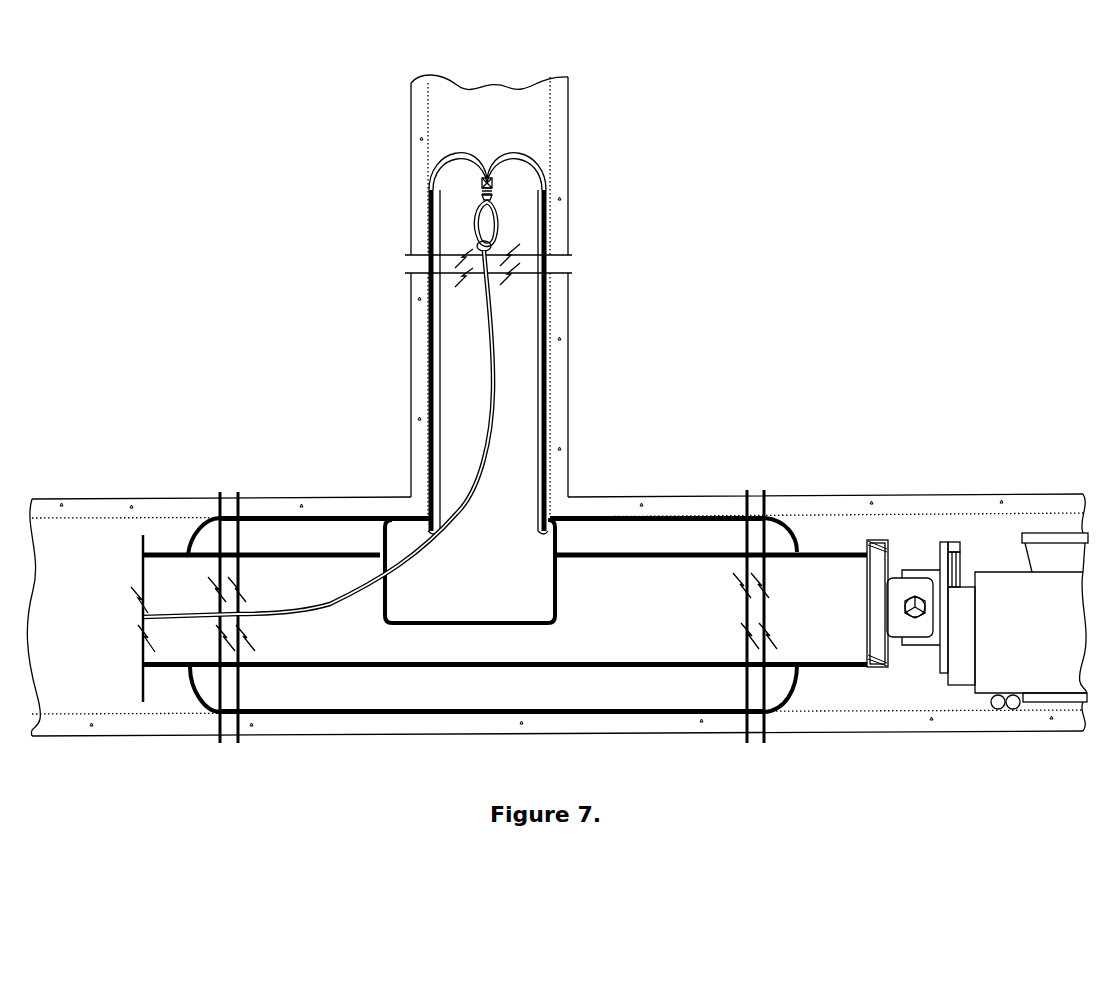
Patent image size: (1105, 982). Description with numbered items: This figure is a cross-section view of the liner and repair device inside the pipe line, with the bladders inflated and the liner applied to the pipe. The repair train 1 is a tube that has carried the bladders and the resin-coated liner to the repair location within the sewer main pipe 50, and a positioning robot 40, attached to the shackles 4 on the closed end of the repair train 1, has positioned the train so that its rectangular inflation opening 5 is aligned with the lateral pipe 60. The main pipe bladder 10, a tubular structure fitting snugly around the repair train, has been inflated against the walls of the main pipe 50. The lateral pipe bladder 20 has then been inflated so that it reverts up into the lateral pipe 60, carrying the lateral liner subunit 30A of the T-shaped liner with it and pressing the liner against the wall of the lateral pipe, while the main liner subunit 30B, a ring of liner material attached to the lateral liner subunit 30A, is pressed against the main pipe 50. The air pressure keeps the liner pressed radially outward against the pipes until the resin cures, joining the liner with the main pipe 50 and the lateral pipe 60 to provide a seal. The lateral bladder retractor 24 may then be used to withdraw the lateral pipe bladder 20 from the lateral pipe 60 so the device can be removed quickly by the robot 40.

The repair train 1 is at (857, 673).
The shackles 4 is at (912, 587).
The inflation opening 5 is at (568, 583).
The main pipe bladder 10 is at (672, 523).
The lateral pipe bladder 20 is at (432, 188).
The lateral bladder retractor 24 is at (145, 600).
The lateral liner subunit 30A is at (428, 280).
The main liner subunit 30B is at (300, 518).
The positioning robot 40 is at (1057, 547).
The main pipe 50 is at (837, 507).
The lateral pipe 60 is at (558, 122).